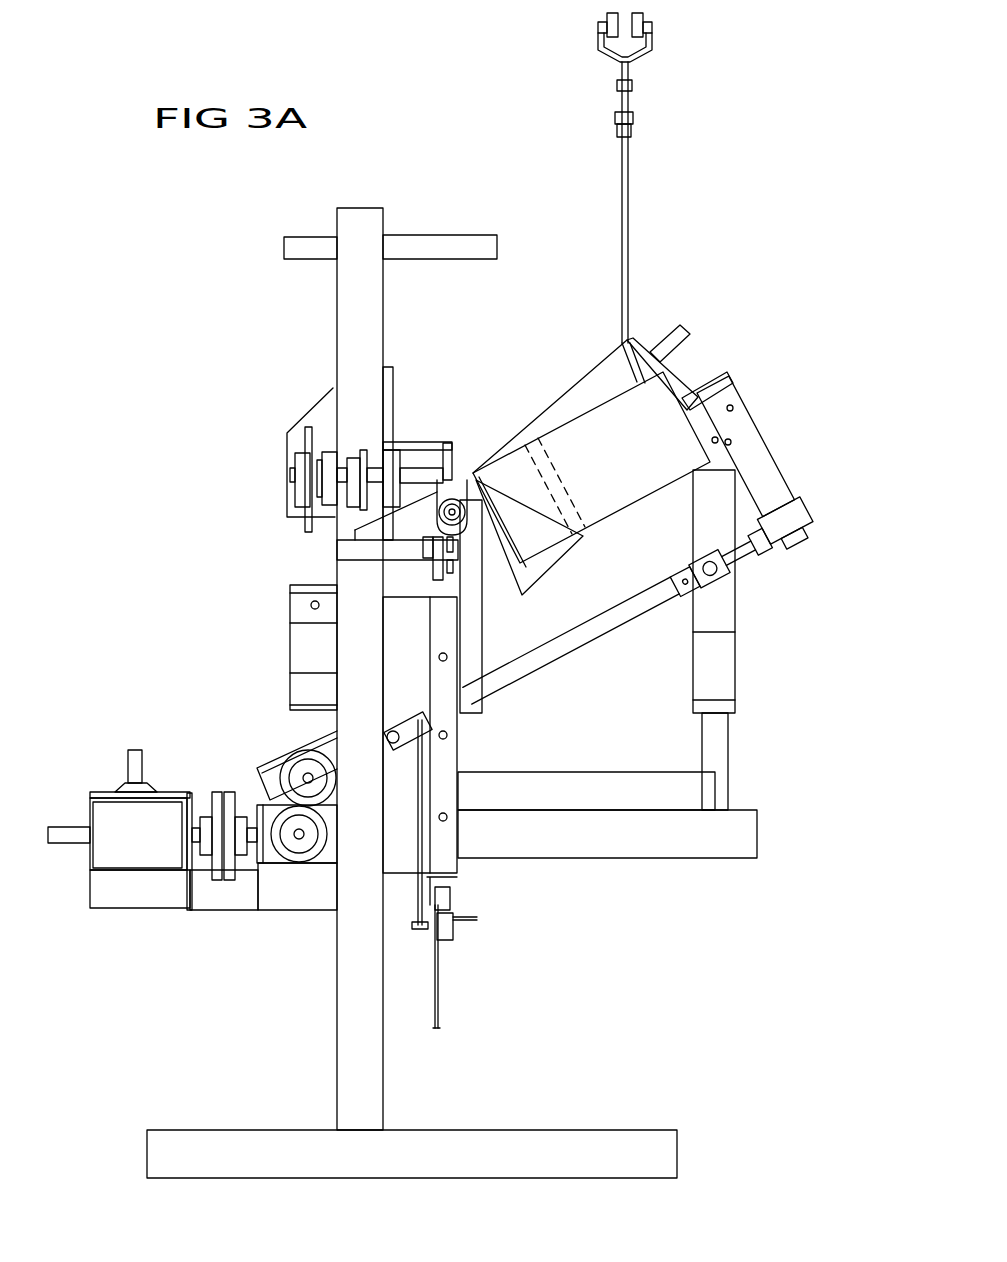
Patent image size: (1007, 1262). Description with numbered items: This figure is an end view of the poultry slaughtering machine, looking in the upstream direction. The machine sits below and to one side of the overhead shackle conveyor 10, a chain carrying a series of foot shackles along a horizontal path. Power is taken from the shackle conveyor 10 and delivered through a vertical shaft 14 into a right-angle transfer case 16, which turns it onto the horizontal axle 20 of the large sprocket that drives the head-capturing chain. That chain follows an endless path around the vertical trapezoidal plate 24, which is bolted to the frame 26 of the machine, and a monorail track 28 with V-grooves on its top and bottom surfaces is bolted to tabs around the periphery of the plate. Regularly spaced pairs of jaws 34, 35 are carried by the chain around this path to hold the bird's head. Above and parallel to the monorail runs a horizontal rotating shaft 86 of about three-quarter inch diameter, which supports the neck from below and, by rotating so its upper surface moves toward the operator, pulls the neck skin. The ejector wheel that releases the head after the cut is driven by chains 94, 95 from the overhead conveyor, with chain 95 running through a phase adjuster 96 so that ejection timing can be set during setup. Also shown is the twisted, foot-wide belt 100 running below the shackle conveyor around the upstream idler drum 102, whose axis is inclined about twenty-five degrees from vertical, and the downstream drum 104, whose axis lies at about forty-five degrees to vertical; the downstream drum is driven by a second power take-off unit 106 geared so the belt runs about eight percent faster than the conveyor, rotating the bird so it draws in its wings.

The shackle conveyor 10 is at (637, 122).
The vertical shaft 14 is at (140, 768).
The right-angle transfer case 16 is at (102, 855).
The horizontal axle 20 is at (240, 857).
The trapezoidal plate 24 is at (458, 895).
The frame 26 is at (413, 886).
The monorail track 28 is at (477, 918).
The fixed jaw 34 is at (438, 1015).
The jaw 35 is at (437, 1025).
The horizontal rotating shaft 86 is at (467, 500).
The chain 94 is at (308, 421).
The chain 95 is at (363, 440).
The phase adjuster 96 is at (303, 642).
The twisted belt 100 is at (603, 368).
The upstream idler drum 102 is at (682, 373).
The downstream drum 104 is at (632, 503).
The second power take-off unit 106 is at (613, 618).